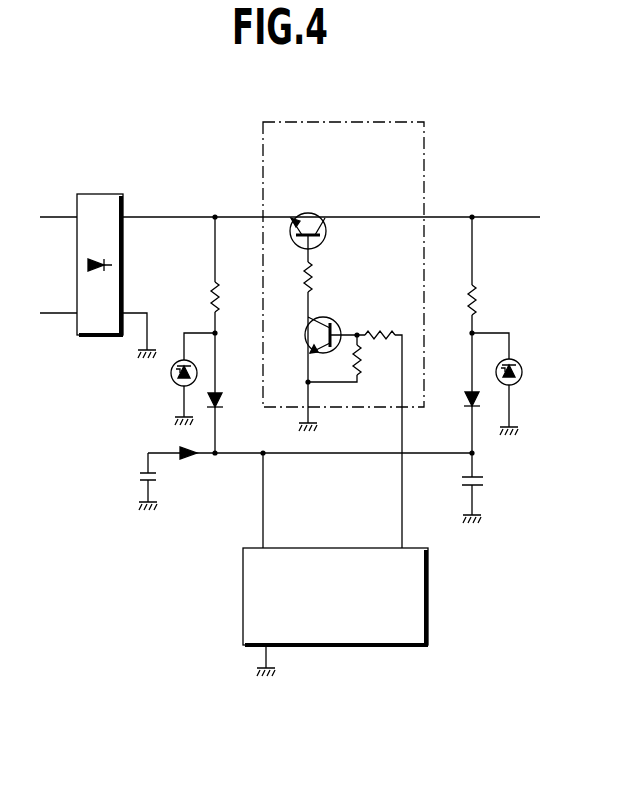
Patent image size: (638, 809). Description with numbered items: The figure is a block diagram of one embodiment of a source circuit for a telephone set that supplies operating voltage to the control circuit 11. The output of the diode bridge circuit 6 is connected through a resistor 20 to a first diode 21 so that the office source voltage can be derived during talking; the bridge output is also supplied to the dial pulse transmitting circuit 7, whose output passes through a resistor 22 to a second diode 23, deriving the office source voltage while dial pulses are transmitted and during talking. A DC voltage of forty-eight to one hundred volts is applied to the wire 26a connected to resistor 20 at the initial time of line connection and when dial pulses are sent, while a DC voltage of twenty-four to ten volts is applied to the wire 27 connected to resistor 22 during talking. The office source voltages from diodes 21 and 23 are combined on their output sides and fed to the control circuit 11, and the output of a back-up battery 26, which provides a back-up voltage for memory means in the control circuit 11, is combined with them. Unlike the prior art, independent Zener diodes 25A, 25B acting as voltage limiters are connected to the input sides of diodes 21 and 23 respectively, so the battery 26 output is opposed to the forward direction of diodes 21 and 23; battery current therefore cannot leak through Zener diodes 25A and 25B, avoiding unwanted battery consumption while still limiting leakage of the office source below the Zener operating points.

The diode bridge circuit 6 is at (114, 194).
The wire 26a is at (177, 215).
The wire 27 is at (498, 214).
The resistor 20 is at (206, 301).
The first diode 21 is at (232, 400).
The resistor 22 is at (480, 300).
The second diode 23 is at (462, 401).
The Zener diode 25A is at (172, 377).
The Zener diode 25B is at (524, 374).
The back-up battery 26 is at (137, 477).
The dial pulse transmitting circuit 7 is at (427, 168).
The control circuit 11 is at (243, 562).